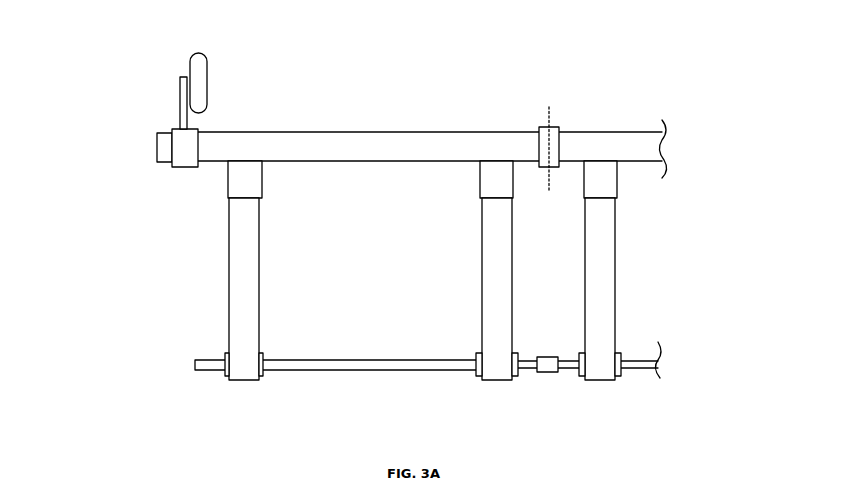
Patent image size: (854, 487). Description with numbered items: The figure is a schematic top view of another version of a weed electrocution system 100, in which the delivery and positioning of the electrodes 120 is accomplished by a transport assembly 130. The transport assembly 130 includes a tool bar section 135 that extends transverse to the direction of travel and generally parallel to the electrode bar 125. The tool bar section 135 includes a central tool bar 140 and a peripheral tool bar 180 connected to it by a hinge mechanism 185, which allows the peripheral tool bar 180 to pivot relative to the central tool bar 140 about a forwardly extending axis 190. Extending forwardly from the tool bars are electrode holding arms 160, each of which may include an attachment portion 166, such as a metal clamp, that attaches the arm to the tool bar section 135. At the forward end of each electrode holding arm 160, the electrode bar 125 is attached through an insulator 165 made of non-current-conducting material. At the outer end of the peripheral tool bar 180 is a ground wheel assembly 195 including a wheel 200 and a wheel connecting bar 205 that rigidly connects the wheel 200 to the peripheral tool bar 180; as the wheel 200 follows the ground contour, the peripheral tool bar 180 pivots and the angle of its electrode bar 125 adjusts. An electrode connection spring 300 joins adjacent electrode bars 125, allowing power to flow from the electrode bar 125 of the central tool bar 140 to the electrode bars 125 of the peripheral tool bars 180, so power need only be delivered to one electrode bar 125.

The weed electrocution system 100 is at (622, 62).
The electrodes 120 is at (187, 384).
The electrode bar 125 is at (353, 370).
The transport assembly 130 is at (76, 168).
The tool bar section 135 is at (708, 120).
The central tool bar 140 is at (627, 135).
The electrode holding arm 160 is at (257, 242).
The insulator 165 is at (264, 372).
The attachment portion 166 is at (262, 175).
The peripheral tool bar 180 is at (318, 138).
The hinge mechanism 185 is at (537, 140).
The forwardly extending axis 190 is at (553, 107).
The ground wheel assembly 195 is at (154, 46).
The wheel 200 is at (207, 72).
The wheel connecting bar 205 is at (180, 97).
The electrode connection spring 300 is at (548, 372).